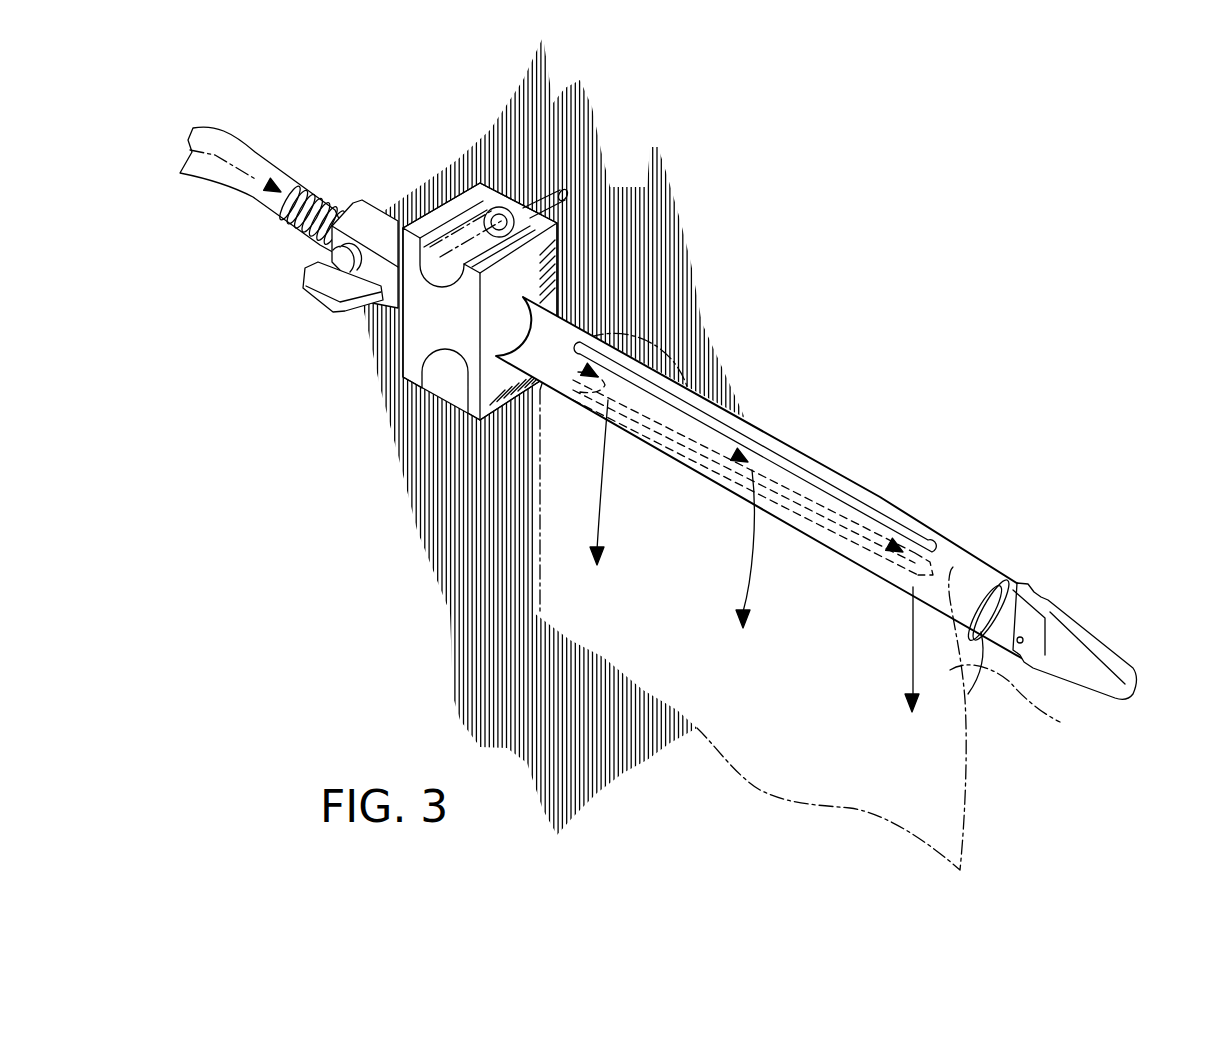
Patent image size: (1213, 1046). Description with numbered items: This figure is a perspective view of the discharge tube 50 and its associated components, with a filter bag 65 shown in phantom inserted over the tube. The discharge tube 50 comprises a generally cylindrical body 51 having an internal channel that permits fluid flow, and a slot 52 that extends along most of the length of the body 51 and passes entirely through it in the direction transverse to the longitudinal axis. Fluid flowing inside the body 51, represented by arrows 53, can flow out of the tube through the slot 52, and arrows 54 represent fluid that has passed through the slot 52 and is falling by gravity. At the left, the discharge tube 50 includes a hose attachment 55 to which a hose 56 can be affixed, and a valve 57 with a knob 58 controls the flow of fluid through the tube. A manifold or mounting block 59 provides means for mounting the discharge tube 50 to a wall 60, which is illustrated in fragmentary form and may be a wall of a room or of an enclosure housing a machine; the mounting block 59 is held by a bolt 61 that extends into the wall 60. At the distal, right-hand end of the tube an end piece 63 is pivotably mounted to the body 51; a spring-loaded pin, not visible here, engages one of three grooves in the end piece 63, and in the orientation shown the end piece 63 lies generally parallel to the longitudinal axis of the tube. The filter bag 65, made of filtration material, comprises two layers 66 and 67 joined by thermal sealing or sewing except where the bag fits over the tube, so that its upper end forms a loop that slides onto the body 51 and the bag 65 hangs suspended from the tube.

The discharge tube 50 is at (1020, 522).
The cylindrical body 51 is at (561, 317).
The slot 52 is at (818, 470).
The arrows 53 is at (640, 340).
The arrows 54 is at (755, 563).
The hose attachment 55 is at (317, 197).
The hose 56 is at (237, 153).
The valve 57 is at (377, 230).
The knob 58 is at (312, 283).
The mounting block 59 is at (410, 348).
The wall 60 is at (583, 181).
The bolt 61 is at (497, 217).
The end piece 63 is at (1077, 664).
The filter bag 65 is at (958, 808).
The layer 66 is at (968, 694).
The layer 67 is at (1060, 722).